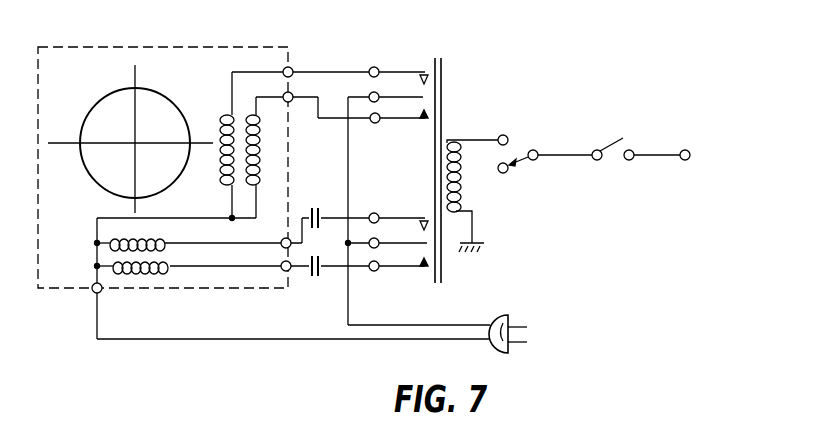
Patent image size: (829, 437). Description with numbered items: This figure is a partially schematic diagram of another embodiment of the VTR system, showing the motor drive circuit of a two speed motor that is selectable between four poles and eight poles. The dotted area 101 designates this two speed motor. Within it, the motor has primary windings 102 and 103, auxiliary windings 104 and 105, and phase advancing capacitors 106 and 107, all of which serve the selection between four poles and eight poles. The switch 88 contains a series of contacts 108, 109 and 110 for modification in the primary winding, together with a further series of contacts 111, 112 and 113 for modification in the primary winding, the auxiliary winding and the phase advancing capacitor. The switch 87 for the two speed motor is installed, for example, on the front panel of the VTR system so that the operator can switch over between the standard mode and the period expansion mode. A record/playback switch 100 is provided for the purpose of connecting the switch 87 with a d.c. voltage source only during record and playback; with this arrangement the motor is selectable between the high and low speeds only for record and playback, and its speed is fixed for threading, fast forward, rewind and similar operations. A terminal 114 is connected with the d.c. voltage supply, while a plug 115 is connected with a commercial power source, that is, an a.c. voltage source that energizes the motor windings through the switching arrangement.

The dotted area 101 is at (180, 46).
The primary winding 102 is at (258, 135).
The primary winding 103 is at (233, 123).
The auxiliary winding 104 is at (125, 274).
The auxiliary winding 105 is at (167, 249).
The phase advancing capacitor 106 is at (315, 278).
The phase advancing capacitor 107 is at (314, 207).
The contact 108 is at (370, 93).
The contact 109 is at (375, 123).
The contact 110 is at (379, 69).
The contact 111 is at (378, 239).
The contact 112 is at (374, 271).
The contact 113 is at (371, 214).
The terminal 114 is at (686, 170).
The plug 115 is at (506, 322).
The switch 88 is at (447, 143).
The switch 87 is at (510, 158).
The record/playback switch 100 is at (609, 145).